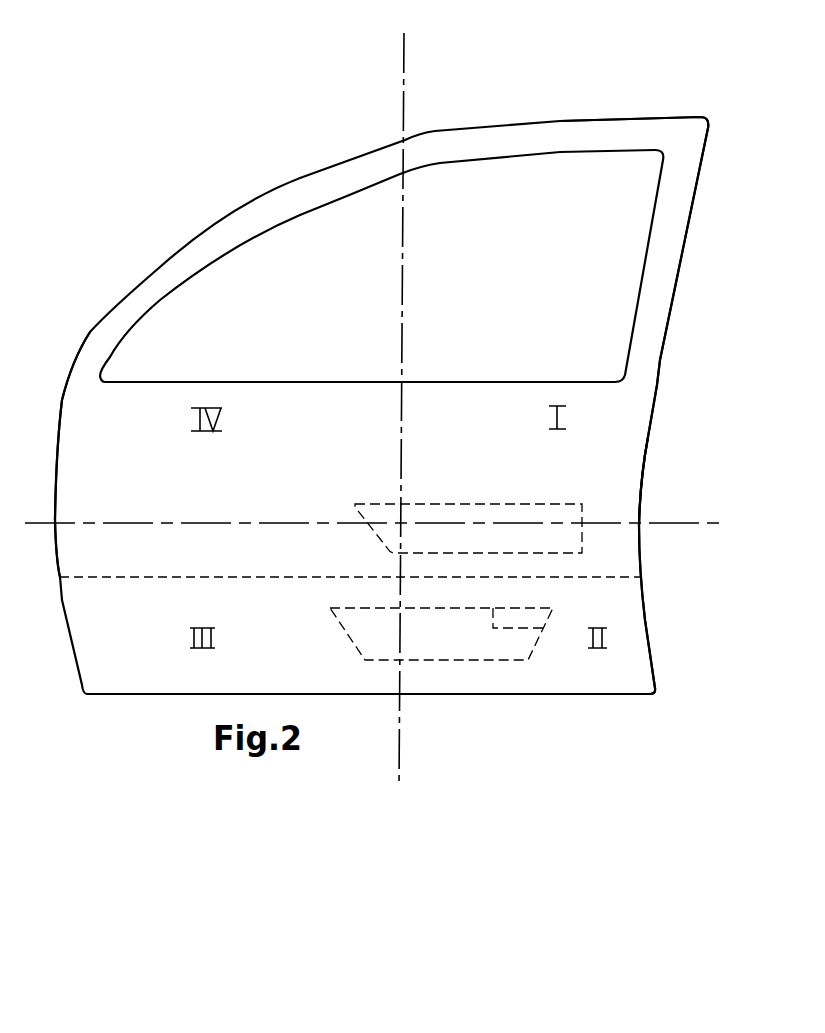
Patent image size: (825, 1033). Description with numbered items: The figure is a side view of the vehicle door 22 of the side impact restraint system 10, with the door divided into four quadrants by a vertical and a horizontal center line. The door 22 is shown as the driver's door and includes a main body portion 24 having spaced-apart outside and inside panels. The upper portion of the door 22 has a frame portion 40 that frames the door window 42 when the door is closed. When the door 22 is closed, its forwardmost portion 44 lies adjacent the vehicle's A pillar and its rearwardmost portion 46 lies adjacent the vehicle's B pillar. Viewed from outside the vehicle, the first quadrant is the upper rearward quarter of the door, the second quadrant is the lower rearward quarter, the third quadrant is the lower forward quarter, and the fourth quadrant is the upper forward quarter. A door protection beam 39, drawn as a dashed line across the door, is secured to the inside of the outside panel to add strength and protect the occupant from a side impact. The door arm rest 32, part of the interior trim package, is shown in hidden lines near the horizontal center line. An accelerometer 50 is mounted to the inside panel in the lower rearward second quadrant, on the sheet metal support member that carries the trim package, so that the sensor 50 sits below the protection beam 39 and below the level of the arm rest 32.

The side impact restraint system 10 is at (740, 163).
The vehicle door 22 is at (662, 600).
The main body portion 24 is at (597, 468).
The door arm rest 32 is at (467, 523).
The door protection beam 39 is at (200, 563).
The frame portion 40 is at (672, 327).
The door window 42 is at (490, 310).
The forwardmost portion 44 is at (58, 428).
The rearwardmost portion 46 is at (648, 437).
The accelerometer 50 is at (525, 618).